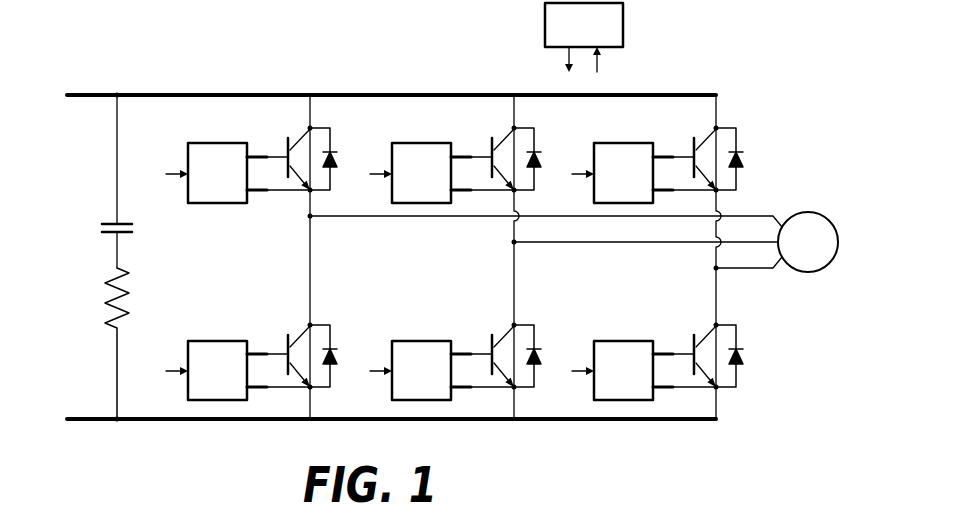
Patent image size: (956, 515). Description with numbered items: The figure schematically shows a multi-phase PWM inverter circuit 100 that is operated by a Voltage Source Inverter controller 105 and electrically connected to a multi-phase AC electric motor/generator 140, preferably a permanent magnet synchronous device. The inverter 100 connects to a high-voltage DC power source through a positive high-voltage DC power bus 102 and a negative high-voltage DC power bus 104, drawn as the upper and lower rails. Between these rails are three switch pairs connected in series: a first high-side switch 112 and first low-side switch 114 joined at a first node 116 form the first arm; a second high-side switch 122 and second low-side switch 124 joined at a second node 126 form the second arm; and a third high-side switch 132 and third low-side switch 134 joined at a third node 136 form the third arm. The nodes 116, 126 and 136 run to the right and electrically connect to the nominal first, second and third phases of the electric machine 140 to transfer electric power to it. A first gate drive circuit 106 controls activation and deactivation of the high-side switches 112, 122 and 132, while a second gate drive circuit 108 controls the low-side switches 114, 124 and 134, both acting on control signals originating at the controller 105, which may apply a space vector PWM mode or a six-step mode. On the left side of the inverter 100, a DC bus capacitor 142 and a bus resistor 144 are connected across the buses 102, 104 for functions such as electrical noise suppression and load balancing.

The multi-phase PWM inverter circuit 100 is at (390, 58).
The positive high-voltage DC power bus 102 is at (213, 92).
The negative high-voltage DC power bus 104 is at (213, 421).
The Voltage Source Inverter controller 105 is at (566, 37).
The first gate drive circuit 106 is at (200, 186).
The second gate drive circuit 108 is at (200, 383).
The first high-side switch 112 is at (300, 158).
The first low-side switch 114 is at (298, 355).
The first node 116 is at (310, 216).
The second high-side switch 122 is at (503, 158).
The second low-side switch 124 is at (502, 355).
The second node 126 is at (514, 242).
The third high-side switch 132 is at (705, 158).
The third low-side switch 134 is at (704, 355).
The third node 136 is at (716, 268).
The multi-phase AC electric motor/generator 140 is at (790, 254).
The DC bus capacitor 142 is at (110, 224).
The bus resistor 144 is at (104, 298).